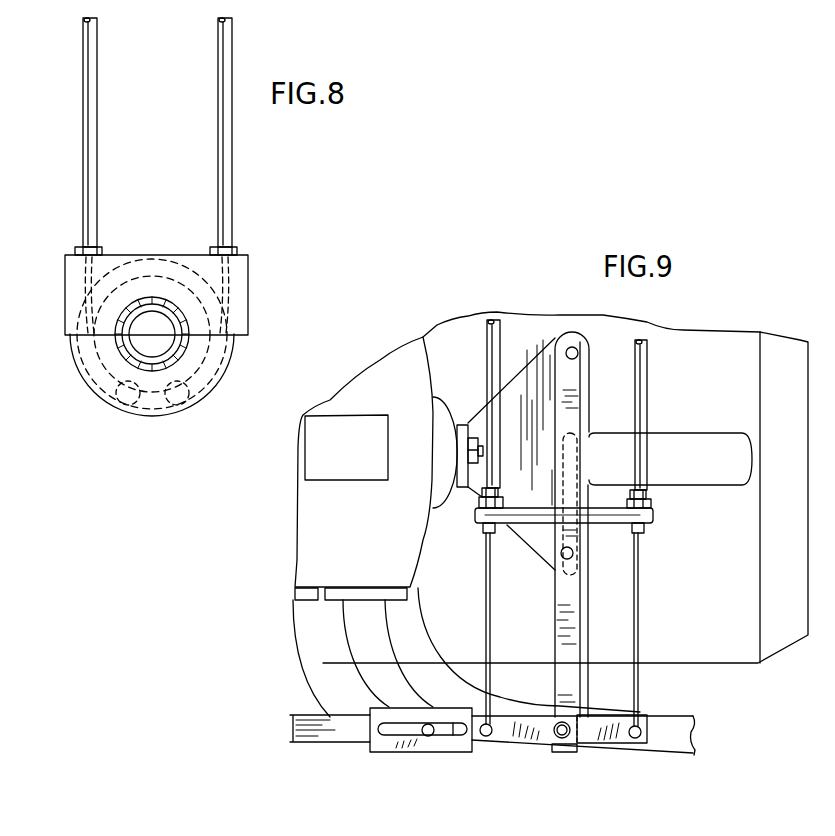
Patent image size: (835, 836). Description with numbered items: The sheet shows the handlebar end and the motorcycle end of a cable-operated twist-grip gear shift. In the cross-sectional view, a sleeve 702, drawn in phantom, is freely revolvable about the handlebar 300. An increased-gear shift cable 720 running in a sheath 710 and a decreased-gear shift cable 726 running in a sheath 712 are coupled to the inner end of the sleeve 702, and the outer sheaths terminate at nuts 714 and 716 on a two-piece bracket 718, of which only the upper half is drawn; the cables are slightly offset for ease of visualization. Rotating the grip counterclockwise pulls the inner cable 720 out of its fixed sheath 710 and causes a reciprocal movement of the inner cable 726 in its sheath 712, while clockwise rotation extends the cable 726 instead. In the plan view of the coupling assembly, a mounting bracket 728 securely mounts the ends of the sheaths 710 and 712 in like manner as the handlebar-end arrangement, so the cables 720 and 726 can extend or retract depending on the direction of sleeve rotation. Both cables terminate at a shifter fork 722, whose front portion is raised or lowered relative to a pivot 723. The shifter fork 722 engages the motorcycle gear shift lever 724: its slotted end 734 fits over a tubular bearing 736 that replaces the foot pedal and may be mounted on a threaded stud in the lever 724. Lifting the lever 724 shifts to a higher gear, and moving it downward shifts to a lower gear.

In FIG. 8, the handlebar 300 is at (152, 334).
In FIG. 8, the sleeve 702 is at (152, 350).
In FIG. 8, the sheath 710 is at (83, 178).
In FIG. 9, the sheath 710 is at (485, 324).
In FIG. 8, the sheath 712 is at (232, 178).
In FIG. 9, the sheath 712 is at (649, 378).
In FIG. 8, the nut 714 is at (76, 247).
In FIG. 8, the nut 716 is at (238, 249).
In FIG. 8, the two-piece bracket 718 is at (249, 306).
In FIG. 8, the increased-gear shift cable 720 is at (80, 371).
In FIG. 9, the increased-gear shift cable 720 is at (488, 611).
In FIG. 9, the shifter fork 722 is at (503, 739).
In FIG. 9, the pivot 723 is at (562, 741).
In FIG. 9, the motorcycle gear shift lever 724 is at (350, 733).
In FIG. 8, the decreased-gear shift cable 726 is at (222, 380).
In FIG. 9, the decreased-gear shift cable 726 is at (639, 613).
In FIG. 9, the mounting bracket 728 is at (656, 519).
In FIG. 9, the slotted end 734 is at (418, 752).
In FIG. 9, the tubular bearing 736 is at (428, 722).